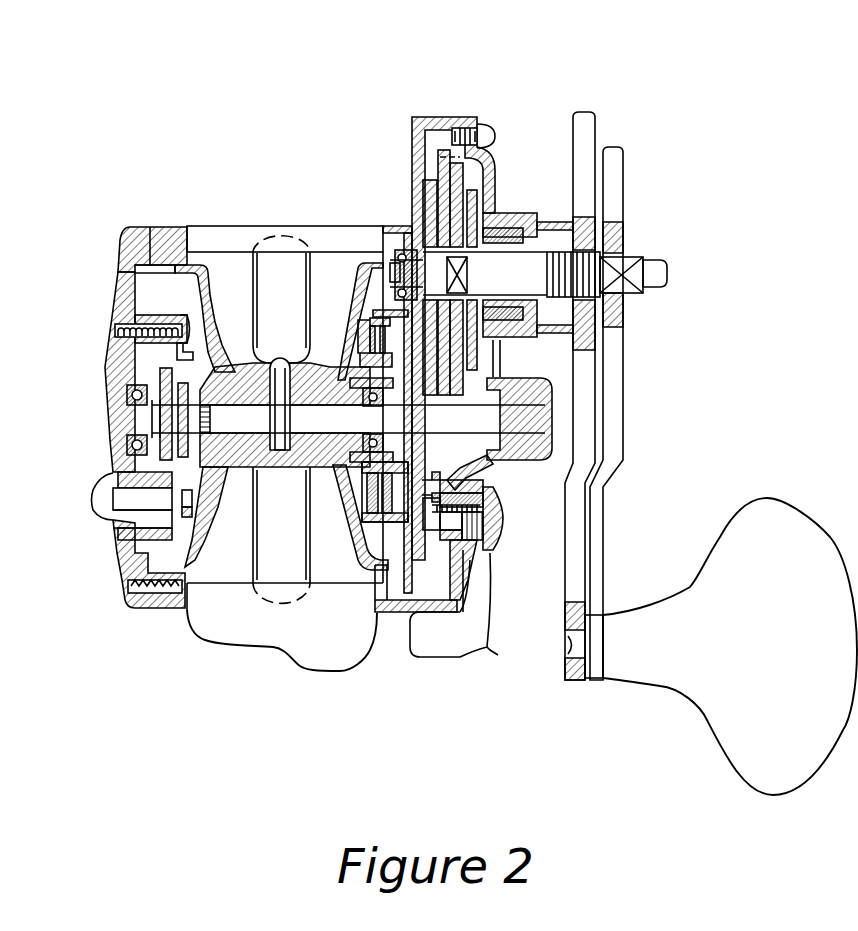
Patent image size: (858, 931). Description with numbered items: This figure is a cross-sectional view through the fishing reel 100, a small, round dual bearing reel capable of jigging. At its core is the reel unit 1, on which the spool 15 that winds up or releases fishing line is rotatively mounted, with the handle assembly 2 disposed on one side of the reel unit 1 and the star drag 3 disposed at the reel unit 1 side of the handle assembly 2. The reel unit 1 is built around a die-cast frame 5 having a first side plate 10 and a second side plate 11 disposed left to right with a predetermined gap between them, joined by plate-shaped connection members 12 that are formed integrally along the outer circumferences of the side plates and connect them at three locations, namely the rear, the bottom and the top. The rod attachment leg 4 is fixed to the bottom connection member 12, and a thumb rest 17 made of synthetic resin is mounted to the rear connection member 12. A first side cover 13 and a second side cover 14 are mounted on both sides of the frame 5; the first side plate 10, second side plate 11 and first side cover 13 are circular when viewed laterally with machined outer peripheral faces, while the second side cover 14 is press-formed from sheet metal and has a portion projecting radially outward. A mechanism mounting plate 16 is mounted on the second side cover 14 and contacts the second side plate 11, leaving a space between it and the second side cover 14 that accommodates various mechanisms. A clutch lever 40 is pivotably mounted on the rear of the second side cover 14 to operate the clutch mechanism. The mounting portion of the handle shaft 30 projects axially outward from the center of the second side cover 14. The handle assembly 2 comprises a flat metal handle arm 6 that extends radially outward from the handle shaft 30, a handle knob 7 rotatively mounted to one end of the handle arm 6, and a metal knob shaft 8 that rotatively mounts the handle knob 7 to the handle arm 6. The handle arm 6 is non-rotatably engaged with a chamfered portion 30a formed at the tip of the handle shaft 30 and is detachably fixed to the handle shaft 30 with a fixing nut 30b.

The fishing reel 100 is at (690, 123).
The reel unit 1 is at (337, 113).
The handle assembly 2 is at (739, 378).
The star drag 3 is at (583, 114).
The rod attachment leg 4 is at (280, 222).
The frame 5 is at (282, 188).
The handle arm 6 is at (627, 375).
The handle knob 7 is at (763, 497).
The knob shaft 8 is at (585, 615).
The first side plate 10 is at (160, 228).
The second side plate 11 is at (388, 222).
The connection members 12 is at (245, 238).
The first side cover 13 is at (123, 243).
The second side cover 14 is at (463, 657).
The spool 15 is at (338, 468).
The mechanism mounting plate 16 is at (440, 117).
The thumb rest 17 is at (213, 622).
The handle shaft 30 is at (512, 257).
The chamfered portion 30a is at (628, 257).
The fixing nut 30b is at (657, 250).
The clutch lever 40 is at (493, 652).